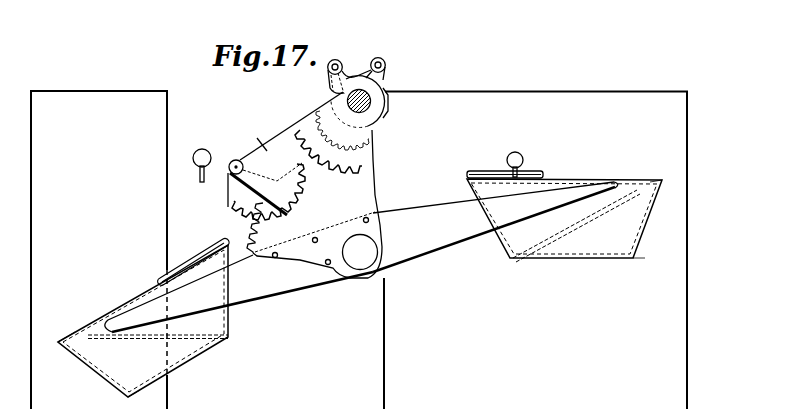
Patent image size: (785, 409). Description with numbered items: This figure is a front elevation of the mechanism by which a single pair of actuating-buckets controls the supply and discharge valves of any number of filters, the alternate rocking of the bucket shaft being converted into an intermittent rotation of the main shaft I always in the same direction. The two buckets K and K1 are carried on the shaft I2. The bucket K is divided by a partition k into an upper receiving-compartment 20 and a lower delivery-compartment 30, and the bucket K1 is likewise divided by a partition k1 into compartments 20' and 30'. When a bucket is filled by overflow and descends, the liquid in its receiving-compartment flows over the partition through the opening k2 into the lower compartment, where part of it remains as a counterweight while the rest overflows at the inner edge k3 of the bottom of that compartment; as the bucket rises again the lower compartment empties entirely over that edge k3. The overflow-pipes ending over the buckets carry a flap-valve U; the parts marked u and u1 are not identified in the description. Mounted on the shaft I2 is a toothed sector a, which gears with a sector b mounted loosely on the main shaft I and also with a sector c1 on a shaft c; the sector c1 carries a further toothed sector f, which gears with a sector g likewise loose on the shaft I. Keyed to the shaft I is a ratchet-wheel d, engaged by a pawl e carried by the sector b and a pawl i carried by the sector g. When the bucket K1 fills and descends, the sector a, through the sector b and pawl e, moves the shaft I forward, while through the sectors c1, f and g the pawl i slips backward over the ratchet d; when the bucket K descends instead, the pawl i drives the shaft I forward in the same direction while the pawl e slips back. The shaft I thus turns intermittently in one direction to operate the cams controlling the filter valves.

The main shaft I is at (369, 105).
The ratchet-wheel d is at (385, 80).
The pawl e is at (367, 73).
The pawl i is at (333, 83).
The toothed sector b is at (320, 107).
The toothed sector g is at (302, 118).
The toothed sector f is at (253, 133).
The shaft c is at (235, 159).
The flap-valve U is at (200, 148).
The pin head u is at (522, 166).
The toothed sector c1 is at (232, 197).
The toothed sector a is at (314, 204).
The shaft I2 is at (358, 260).
The receiving-compartment 20 is at (239, 293).
The bucket K is at (148, 292).
The flange u1 is at (480, 173).
The opening k2 is at (645, 185).
The partition k is at (141, 345).
The delivery-compartment 30 is at (104, 382).
The delivery-compartment 30' is at (633, 269).
The inner edge of bottom of lower compartment k3 is at (515, 258).
The bucket K1 is at (602, 175).
The receiving-compartment 20' is at (495, 223).
The partition k1 is at (590, 216).